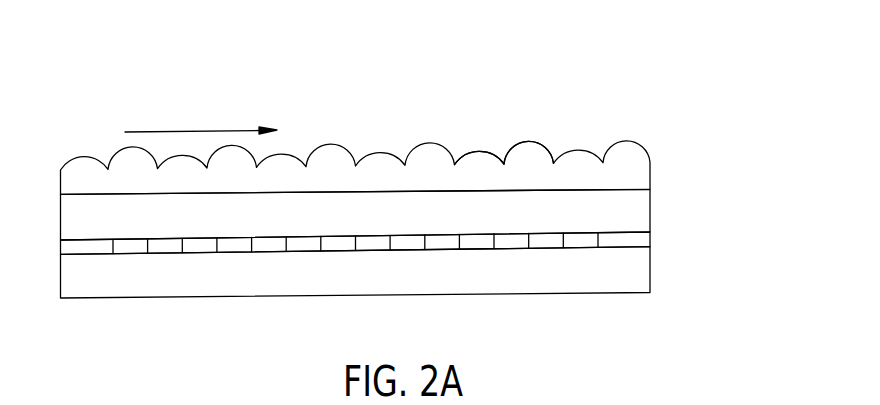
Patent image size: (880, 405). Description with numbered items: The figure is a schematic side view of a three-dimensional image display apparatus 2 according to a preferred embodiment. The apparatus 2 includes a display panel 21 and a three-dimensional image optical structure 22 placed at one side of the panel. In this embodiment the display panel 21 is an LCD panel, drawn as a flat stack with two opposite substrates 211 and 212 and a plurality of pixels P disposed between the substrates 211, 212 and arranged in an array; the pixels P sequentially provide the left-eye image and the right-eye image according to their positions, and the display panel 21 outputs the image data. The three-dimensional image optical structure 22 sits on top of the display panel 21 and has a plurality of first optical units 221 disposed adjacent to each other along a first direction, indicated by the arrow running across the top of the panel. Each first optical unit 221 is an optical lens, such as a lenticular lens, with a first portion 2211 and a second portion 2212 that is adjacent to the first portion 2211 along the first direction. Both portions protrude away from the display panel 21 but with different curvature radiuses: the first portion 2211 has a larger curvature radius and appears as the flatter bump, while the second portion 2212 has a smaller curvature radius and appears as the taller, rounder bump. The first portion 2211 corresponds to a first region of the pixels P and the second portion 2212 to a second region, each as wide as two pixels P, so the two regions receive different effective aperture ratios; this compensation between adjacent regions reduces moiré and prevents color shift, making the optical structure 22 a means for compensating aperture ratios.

The 3D image display apparatus 2 is at (83, 60).
The display panel 21 is at (745, 212).
The substrate 211 is at (643, 267).
The substrate 212 is at (643, 218).
The 3D image optical structure 22 is at (66, 187).
The first optical unit 221 is at (557, 73).
The first portion 2211 is at (479, 152).
The second portion 2212 is at (528, 143).
The pixel P is at (580, 243).